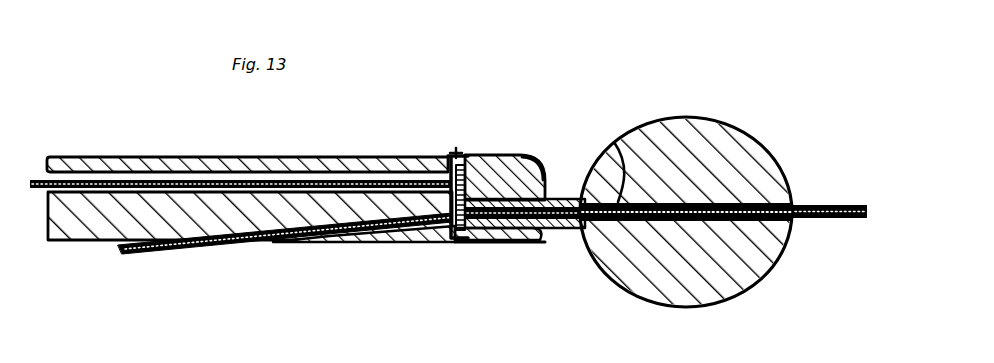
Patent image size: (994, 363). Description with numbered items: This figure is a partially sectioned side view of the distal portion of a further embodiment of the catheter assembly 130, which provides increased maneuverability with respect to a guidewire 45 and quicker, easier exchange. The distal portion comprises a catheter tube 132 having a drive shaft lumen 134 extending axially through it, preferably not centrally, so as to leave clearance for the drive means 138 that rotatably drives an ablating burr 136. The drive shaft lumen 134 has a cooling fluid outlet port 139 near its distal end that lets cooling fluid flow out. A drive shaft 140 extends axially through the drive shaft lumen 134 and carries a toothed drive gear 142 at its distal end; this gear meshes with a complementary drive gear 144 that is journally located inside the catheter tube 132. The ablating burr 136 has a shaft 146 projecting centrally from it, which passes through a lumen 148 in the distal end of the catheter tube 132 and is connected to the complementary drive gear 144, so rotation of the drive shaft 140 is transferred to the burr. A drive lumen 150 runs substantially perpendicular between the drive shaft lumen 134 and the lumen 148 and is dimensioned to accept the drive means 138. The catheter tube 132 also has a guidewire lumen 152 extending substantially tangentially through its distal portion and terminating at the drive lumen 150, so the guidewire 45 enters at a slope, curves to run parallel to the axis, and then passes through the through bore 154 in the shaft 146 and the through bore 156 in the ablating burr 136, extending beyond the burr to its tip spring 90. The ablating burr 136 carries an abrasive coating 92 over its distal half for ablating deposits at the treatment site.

The catheter assembly 130 is at (360, 113).
The catheter tube 132 is at (275, 157).
The drive shaft lumen 134 is at (190, 157).
The drive shaft 140 is at (347, 157).
The cooling fluid outlet port 139 is at (398, 157).
The drive means 138 is at (470, 157).
The drive lumen 150 is at (455, 153).
The toothed drive gear 142 is at (515, 157).
The complementary drive gear 144 is at (534, 157).
The through bore 154 is at (577, 230).
The lumen 148 is at (490, 243).
The shaft 146 is at (558, 243).
The abrasive coating 92 is at (752, 133).
The ablating burr 136 is at (683, 138).
The through bore 156 is at (665, 118).
The spring 90 is at (806, 222).
The guidewire 45 is at (182, 248).
The guidewire lumen 152 is at (393, 242).